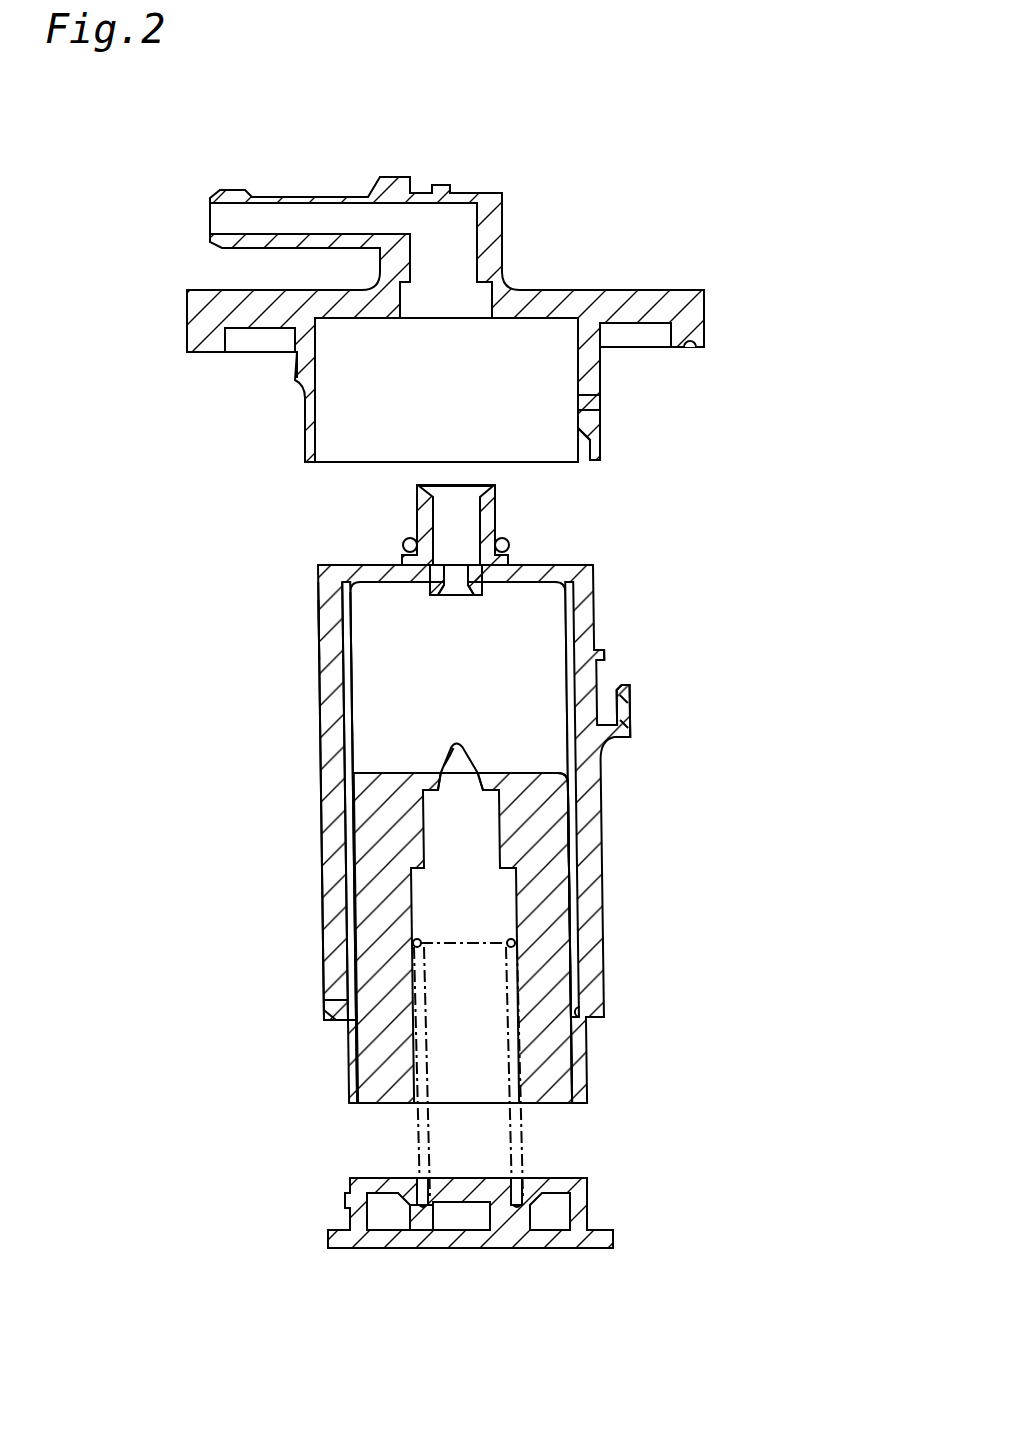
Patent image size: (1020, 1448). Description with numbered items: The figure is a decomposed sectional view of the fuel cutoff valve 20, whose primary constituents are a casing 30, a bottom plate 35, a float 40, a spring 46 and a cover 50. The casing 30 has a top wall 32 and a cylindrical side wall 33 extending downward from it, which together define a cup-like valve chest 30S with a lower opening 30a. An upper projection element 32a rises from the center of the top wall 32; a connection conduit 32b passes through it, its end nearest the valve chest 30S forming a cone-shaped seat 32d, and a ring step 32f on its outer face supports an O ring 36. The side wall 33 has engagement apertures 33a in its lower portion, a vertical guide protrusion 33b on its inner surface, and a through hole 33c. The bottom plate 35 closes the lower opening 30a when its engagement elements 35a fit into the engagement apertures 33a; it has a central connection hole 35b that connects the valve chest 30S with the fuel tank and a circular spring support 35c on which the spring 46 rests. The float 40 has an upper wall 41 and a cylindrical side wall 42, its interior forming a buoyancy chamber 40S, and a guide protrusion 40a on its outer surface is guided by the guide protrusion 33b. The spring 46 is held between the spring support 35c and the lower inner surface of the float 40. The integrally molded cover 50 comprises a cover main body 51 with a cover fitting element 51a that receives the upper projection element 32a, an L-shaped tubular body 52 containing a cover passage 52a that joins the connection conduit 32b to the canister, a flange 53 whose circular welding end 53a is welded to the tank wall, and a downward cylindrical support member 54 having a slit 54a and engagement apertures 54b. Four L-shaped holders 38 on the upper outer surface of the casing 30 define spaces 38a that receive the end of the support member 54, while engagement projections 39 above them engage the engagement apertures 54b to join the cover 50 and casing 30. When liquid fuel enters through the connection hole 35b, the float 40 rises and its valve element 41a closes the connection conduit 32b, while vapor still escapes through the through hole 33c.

The fuel cutoff valve 20 is at (775, 292).
The casing 30 is at (631, 575).
The valve chest 30S is at (372, 730).
The lower opening 30a is at (586, 1015).
The top wall 32 is at (328, 567).
The upper projection element 32a is at (420, 518).
The connection conduit 32b is at (460, 509).
The cone-shaped seat 32d is at (442, 598).
The ring step 32f is at (515, 553).
The side wall 33 is at (330, 680).
The engagement apertures 33a is at (340, 996).
The guide protrusion 33b is at (352, 782).
The through hole 33c is at (328, 633).
The bottom plate 35 is at (583, 1196).
The engagement elements 35a is at (345, 1212).
The connection hole 35b is at (475, 1235).
The spring support 35c is at (415, 1235).
The O ring 36 is at (510, 545).
The holders 38 is at (627, 717).
The space 38a is at (612, 692).
The engagement projections 39 is at (597, 650).
The float 40 is at (700, 750).
The buoyancy chamber 40S is at (490, 915).
The guide protrusion 40a is at (579, 832).
The upper wall 41 is at (530, 785).
The valve element 41a is at (460, 745).
The side wall 42 is at (545, 825).
The spring 46 is at (521, 1135).
The cover 50 is at (507, 138).
The cover main body 51 is at (520, 297).
The cover fitting element 51a is at (487, 242).
The tubular body 52 is at (330, 196).
The cover passage 52a is at (276, 214).
The flange 53 is at (632, 291).
The welding end 53a is at (690, 352).
The support member 54 is at (598, 430).
The slit 54a is at (303, 425).
The engagement apertures 54b is at (598, 398).